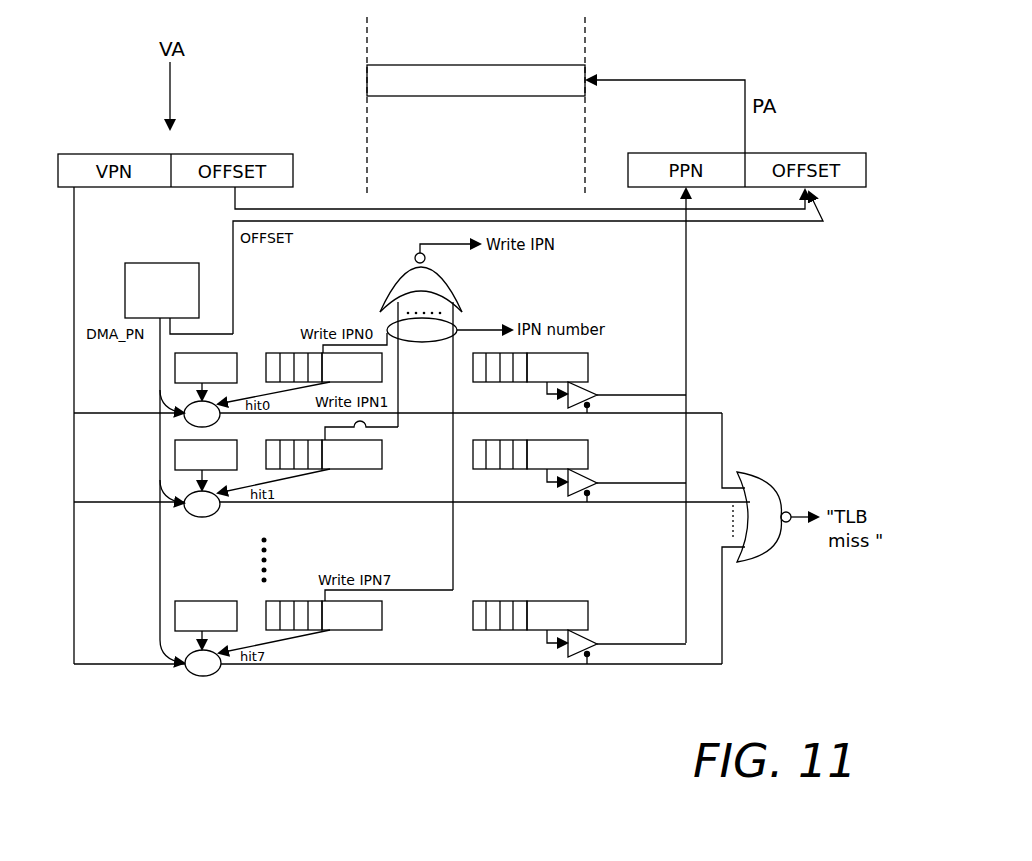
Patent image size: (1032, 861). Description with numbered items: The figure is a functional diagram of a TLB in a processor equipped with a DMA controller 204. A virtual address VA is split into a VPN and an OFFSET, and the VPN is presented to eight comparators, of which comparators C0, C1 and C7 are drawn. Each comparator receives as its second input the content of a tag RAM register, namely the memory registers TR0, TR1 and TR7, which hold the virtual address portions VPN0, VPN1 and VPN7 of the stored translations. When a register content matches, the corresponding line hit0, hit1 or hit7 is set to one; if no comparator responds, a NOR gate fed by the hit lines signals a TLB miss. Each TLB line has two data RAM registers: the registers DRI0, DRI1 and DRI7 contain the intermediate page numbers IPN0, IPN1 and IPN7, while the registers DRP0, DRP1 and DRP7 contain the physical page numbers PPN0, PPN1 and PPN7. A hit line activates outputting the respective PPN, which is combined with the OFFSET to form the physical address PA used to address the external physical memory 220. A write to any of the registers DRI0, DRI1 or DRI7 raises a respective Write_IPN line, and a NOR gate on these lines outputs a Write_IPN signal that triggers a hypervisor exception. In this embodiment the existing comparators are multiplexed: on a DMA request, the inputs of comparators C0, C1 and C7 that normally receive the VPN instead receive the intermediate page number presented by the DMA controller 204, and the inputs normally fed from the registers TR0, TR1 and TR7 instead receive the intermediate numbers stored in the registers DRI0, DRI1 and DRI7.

The DMA controller 204 is at (152, 262).
The external physical memory 220 is at (589, 31).
The memory register TR0 is at (174, 373).
The memory register TR1 is at (174, 458).
The memory register TR7 is at (174, 615).
The comparator C0 is at (215, 424).
The comparator C1 is at (212, 516).
The comparator C7 is at (215, 675).
The memory register DRI0 is at (285, 352).
The memory register DRI1 is at (382, 451).
The memory register DRI7 is at (382, 612).
The memory register DRP0 is at (588, 362).
The memory register DRP1 is at (588, 453).
The memory register DRP7 is at (588, 612).